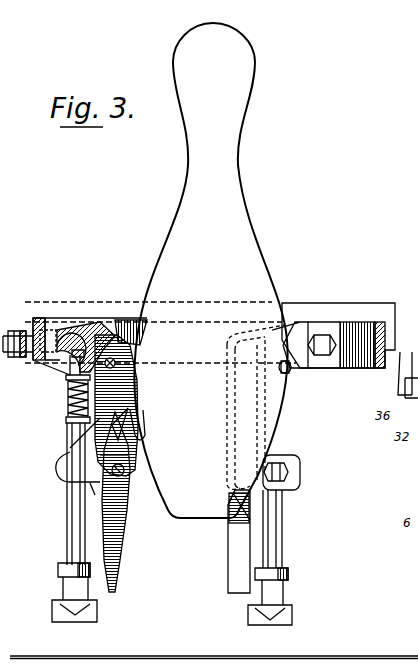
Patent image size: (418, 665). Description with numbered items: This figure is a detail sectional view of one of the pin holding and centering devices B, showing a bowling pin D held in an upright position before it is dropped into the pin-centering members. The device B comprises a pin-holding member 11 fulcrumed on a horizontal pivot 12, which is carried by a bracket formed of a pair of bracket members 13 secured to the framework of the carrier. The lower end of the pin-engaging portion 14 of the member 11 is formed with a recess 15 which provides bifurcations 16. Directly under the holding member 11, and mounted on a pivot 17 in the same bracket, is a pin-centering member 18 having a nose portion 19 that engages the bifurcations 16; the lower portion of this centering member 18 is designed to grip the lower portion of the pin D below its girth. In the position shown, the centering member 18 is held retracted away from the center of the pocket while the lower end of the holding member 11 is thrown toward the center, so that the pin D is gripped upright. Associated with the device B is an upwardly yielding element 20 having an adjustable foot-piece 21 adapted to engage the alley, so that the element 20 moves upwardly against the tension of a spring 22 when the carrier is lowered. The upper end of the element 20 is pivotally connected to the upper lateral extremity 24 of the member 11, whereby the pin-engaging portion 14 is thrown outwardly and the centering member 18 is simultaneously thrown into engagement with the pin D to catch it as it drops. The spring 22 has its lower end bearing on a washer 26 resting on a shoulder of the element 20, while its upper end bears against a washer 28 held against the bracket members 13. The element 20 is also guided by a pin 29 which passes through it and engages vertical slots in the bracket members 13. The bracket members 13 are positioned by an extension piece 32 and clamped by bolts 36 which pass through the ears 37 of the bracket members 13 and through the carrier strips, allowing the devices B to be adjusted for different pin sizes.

The pin D is at (210, 270).
The pin-holding member 11 is at (120, 320).
The horizontal pivot 12 is at (115, 363).
The bracket members 13 is at (318, 294).
The pin-engaging portion 14 is at (135, 397).
The recess 15 is at (128, 415).
The bifurcations 16 is at (140, 432).
The pivot 17 is at (124, 478).
The pin-centering member 18 is at (122, 530).
The nose portion 19 is at (68, 452).
The upwardly yielding element 20 is at (70, 533).
The foot-piece 21 is at (62, 594).
The spring 22 is at (70, 404).
The upper lateral extremity 24 is at (76, 330).
The washer 26 is at (68, 420).
The washer 28 is at (70, 378).
The pin 29 is at (68, 365).
The extension piece 32 is at (25, 330).
The clamping bolts 36 is at (12, 352).
The ears 37 is at (335, 325).
The pin holding and centering device B is at (122, 464).